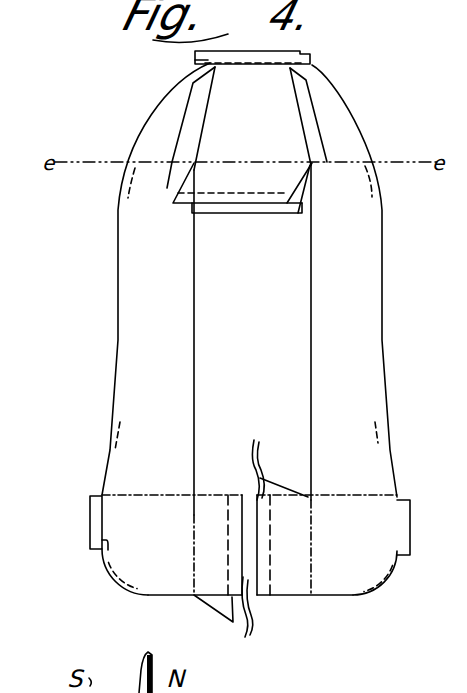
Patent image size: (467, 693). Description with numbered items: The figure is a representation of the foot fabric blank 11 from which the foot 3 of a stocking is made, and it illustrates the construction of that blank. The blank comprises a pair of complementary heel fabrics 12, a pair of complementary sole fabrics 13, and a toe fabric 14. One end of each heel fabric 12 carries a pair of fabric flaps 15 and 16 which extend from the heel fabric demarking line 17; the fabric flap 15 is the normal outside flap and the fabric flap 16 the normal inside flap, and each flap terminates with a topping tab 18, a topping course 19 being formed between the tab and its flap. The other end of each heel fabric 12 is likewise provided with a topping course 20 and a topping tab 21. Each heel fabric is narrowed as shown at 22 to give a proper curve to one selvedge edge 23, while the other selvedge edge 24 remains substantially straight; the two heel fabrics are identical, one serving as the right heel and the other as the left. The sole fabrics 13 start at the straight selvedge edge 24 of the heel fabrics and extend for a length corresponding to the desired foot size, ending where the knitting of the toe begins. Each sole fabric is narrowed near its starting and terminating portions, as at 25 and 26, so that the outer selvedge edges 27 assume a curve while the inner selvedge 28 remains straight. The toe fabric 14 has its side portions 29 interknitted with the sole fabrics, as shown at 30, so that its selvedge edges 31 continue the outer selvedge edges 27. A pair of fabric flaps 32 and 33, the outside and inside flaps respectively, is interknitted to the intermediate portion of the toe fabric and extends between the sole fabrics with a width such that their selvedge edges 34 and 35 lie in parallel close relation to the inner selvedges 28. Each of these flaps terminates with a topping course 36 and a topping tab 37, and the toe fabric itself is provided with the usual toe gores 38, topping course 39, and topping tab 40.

The foot 3 is at (273, 605).
The foot fabric blank 11 is at (115, 343).
The heel fabric 12 is at (170, 575).
The sole fabric 13 is at (332, 362).
The toe fabric 14 is at (160, 127).
The fabric flap 15 is at (227, 612).
The fabric flap 16 is at (212, 507).
The heel fabric demarking line 17 is at (190, 538).
The topping tab 18 is at (252, 537).
The topping course 19 is at (218, 595).
The topping course 20 is at (107, 549).
The topping tab 21 is at (90, 518).
The narrowing 22 is at (145, 585).
The selvedge edge 23 is at (112, 572).
The selvedge edge 24 is at (152, 493).
The narrowing 25 is at (114, 452).
The narrowing 26 is at (127, 207).
The outer selvedge edge 27 is at (118, 277).
The inner selvedge 28 is at (309, 308).
The side portion 29 is at (173, 92).
The interknitting 30 is at (382, 145).
The selvedge edge 31 is at (172, 104).
The fabric flap 32 is at (309, 197).
The fabric flap 33 is at (242, 190).
The selvedge edge 34 is at (260, 141).
The selvedge edge 35 is at (172, 188).
The topping course 36 is at (300, 205).
The topping tab 37 is at (255, 205).
The toe gores 38 is at (300, 93).
The topping course 39 is at (200, 63).
The topping tab 40 is at (309, 52).